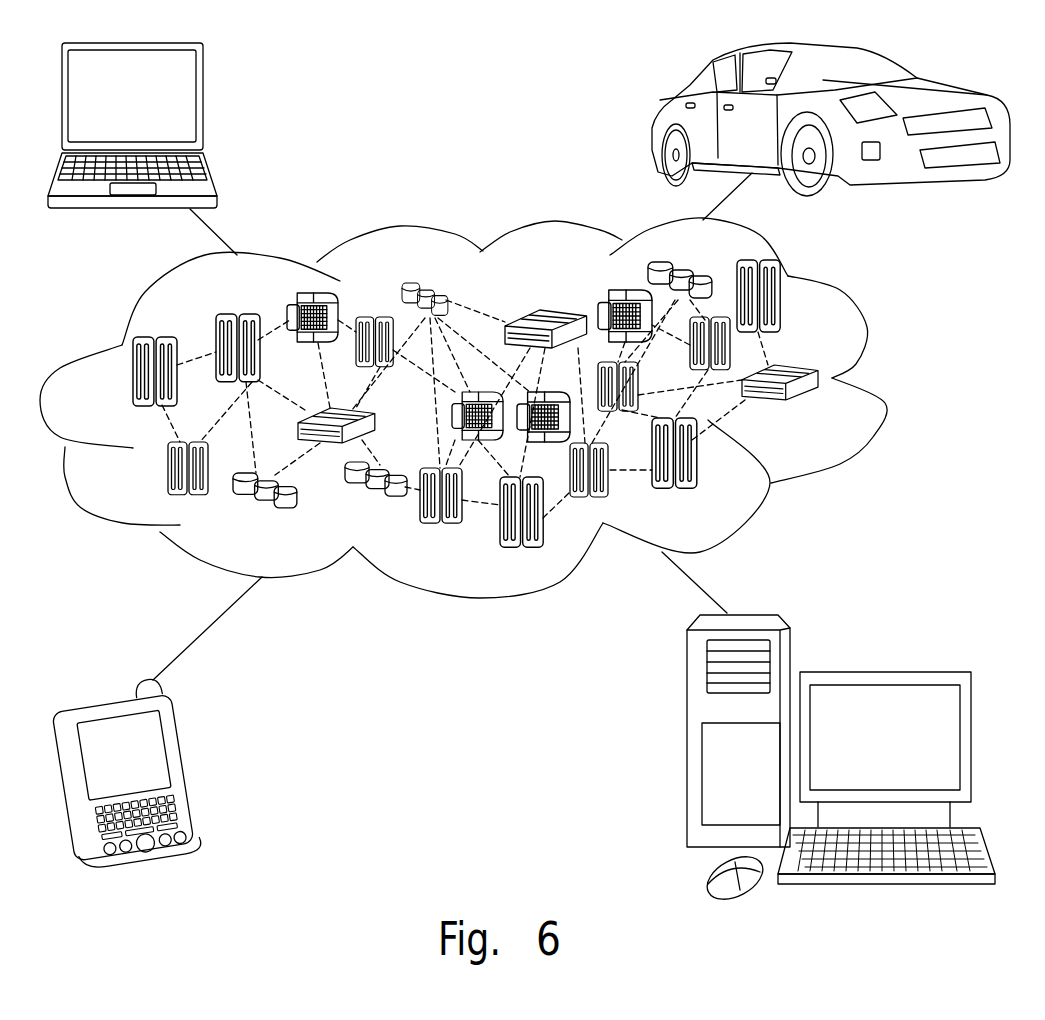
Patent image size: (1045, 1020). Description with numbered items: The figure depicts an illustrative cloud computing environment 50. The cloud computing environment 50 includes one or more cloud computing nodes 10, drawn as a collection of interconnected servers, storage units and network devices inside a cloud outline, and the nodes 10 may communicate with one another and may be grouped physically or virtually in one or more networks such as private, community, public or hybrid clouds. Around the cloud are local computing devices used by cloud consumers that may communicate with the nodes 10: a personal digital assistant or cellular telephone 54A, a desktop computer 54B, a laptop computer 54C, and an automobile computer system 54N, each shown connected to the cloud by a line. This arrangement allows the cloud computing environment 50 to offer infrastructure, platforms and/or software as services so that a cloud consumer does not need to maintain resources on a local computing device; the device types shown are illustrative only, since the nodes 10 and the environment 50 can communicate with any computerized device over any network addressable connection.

The cloud computing node 10 is at (826, 410).
The cloud computing environment 50 is at (879, 379).
The personal digital assistant or cellular telephone 54A is at (192, 768).
The desktop computer 54B is at (881, 673).
The laptop computer 54C is at (204, 101).
The automobile computer system 54N is at (655, 127).